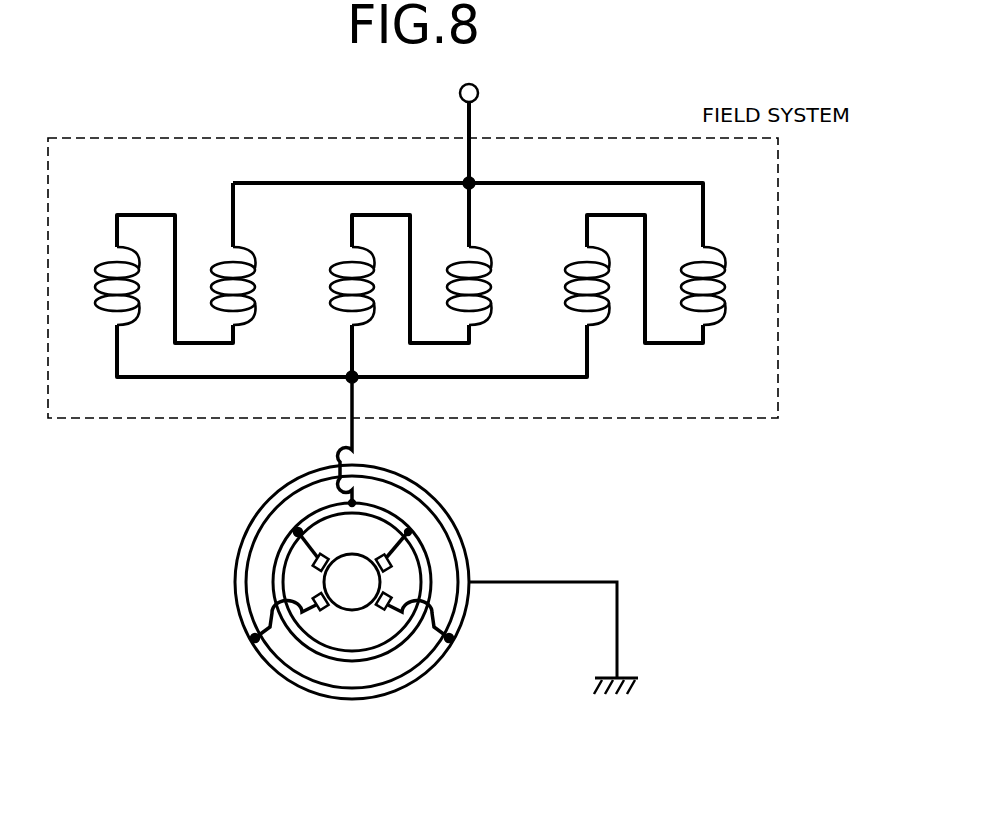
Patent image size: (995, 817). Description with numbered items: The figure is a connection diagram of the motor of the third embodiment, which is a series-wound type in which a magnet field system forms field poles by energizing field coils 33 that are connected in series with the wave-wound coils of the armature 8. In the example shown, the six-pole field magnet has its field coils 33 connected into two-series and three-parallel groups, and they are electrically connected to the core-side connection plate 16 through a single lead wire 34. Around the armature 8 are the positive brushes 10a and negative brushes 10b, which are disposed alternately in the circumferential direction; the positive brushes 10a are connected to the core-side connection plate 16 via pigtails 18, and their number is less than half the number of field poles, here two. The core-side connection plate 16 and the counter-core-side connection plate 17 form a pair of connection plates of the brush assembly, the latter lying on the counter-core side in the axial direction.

The field coils 33 is at (728, 292).
The lead wire 34 is at (345, 433).
The armature 8 is at (340, 582).
The pigtails 18 is at (393, 552).
The positive brushes 10a is at (397, 568).
The negative brushes 10b is at (387, 607).
The core-side connection plate 16 is at (312, 645).
The counter-core-side connection plate 17 is at (340, 695).